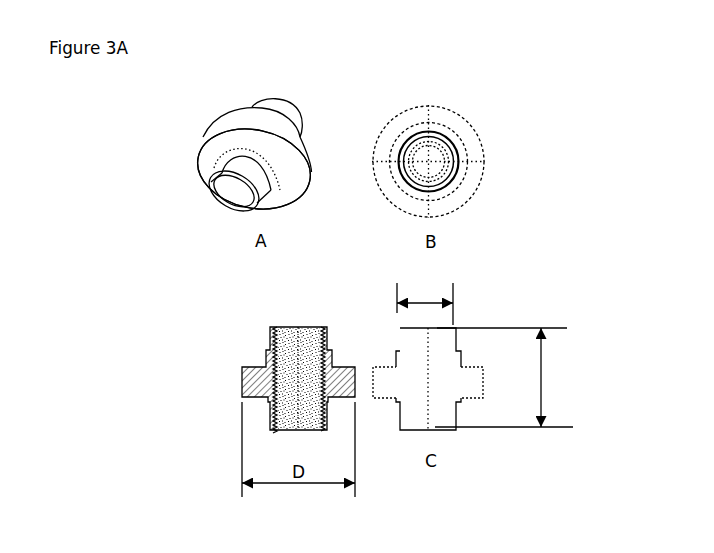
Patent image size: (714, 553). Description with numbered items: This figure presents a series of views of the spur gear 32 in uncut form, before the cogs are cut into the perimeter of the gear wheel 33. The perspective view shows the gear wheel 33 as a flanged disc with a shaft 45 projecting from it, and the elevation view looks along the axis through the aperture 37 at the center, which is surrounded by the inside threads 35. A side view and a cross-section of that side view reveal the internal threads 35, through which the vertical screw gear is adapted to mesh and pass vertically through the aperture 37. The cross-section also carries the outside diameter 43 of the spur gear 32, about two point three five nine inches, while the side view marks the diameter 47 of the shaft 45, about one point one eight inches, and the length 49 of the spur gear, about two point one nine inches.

The spur gear 32 is at (187, 178).
The gear wheel 33 is at (217, 128).
The inside threads 35 is at (417, 170).
The aperture 37 is at (435, 160).
The outside diameter 43 is at (335, 495).
The shaft 45 is at (267, 340).
The diameter 47 is at (412, 289).
The length 49 is at (560, 364).